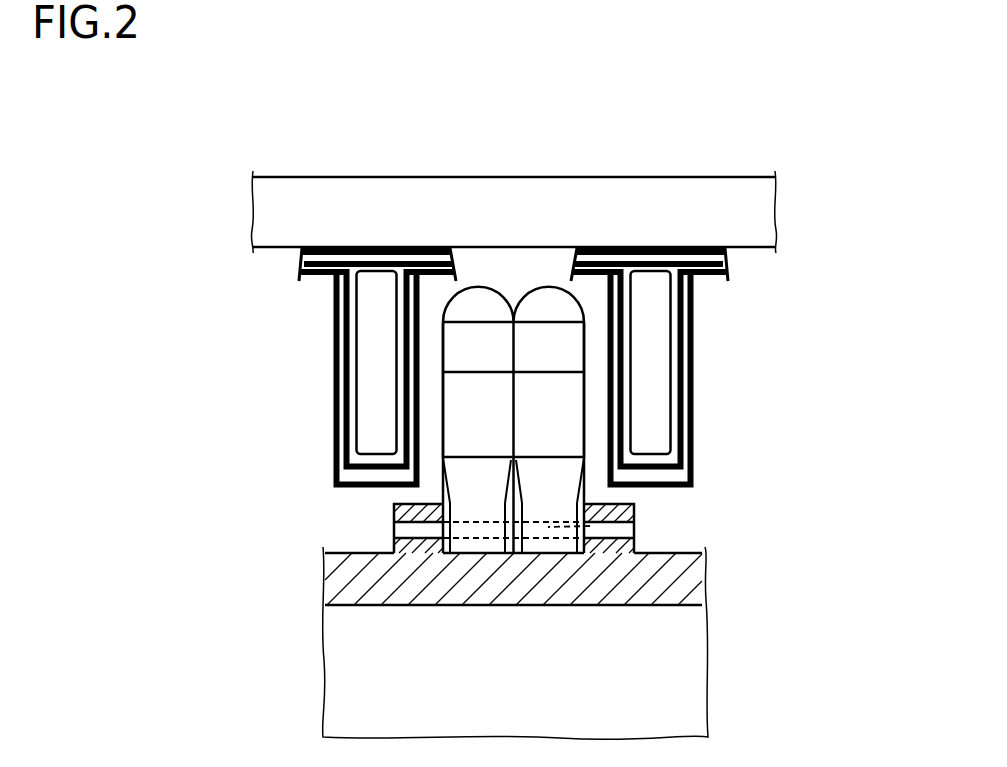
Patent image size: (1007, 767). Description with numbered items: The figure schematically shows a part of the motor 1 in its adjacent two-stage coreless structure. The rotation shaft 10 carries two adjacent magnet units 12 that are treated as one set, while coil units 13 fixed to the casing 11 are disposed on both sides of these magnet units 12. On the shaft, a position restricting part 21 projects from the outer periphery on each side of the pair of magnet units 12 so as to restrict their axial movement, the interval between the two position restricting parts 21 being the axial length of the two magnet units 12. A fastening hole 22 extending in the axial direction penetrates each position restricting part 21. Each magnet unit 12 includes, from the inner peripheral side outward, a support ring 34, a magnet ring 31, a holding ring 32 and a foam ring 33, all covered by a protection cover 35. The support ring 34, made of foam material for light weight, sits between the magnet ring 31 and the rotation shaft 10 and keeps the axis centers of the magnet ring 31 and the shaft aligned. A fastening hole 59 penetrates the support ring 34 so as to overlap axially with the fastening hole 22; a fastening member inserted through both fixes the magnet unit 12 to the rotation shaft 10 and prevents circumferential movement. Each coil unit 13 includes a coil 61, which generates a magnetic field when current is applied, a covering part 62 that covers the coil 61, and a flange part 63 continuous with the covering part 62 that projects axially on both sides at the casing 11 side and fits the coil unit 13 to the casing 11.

The motor 1 is at (632, 114).
The rotation shaft 10 is at (688, 578).
The casing 11 is at (341, 177).
The magnet unit 12 is at (534, 273).
The coil unit 13 is at (322, 357).
The position restricting part 21 is at (400, 512).
The fastening hole 22 is at (400, 536).
The magnet ring 31 is at (553, 423).
The holding ring 32 is at (553, 346).
The foam ring 33 is at (553, 308).
The support ring 34 is at (553, 495).
The protection cover 35 is at (440, 493).
The fastening hole 59 is at (590, 526).
The coil 61 is at (375, 389).
The covering part 62 is at (332, 327).
The flange part 63 is at (321, 287).